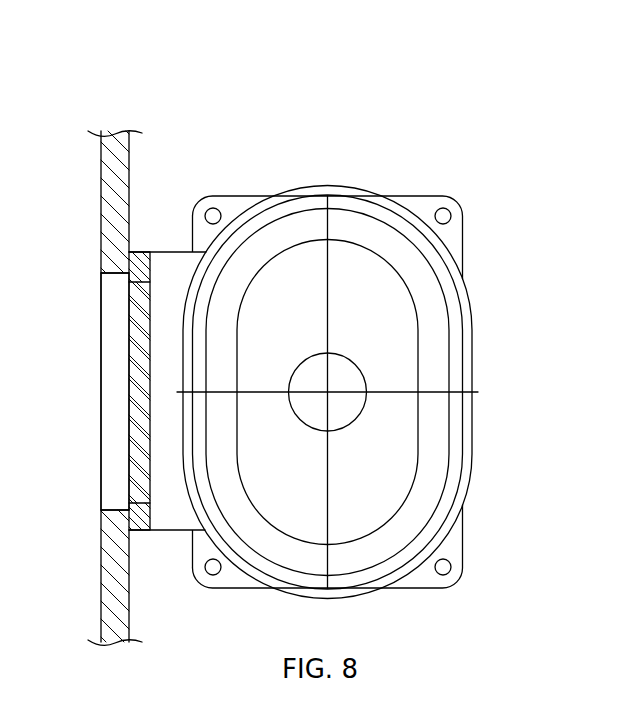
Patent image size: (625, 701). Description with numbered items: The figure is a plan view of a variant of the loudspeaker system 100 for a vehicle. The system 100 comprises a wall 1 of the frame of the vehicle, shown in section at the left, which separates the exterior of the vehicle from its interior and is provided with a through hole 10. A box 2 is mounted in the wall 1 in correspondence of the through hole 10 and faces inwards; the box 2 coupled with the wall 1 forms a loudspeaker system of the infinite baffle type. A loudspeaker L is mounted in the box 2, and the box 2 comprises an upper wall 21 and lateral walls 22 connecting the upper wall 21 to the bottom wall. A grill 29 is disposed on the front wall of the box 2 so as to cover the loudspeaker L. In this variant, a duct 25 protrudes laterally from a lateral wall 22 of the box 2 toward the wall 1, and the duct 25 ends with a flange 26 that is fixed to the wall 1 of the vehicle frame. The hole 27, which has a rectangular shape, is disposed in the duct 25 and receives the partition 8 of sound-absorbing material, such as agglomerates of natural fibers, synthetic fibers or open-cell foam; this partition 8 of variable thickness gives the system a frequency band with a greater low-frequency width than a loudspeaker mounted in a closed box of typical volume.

The system 100 is at (349, 331).
The wall 1 is at (118, 159).
The partition 8 is at (122, 458).
The through hole 10 is at (109, 295).
The lateral wall 22 is at (192, 233).
The flange 26 is at (138, 258).
The hole 27 is at (142, 492).
The duct 25 is at (143, 312).
The upper wall 21 is at (408, 199).
The box 2 is at (476, 511).
The grill 29 is at (317, 233).
The loudspeaker L is at (398, 325).